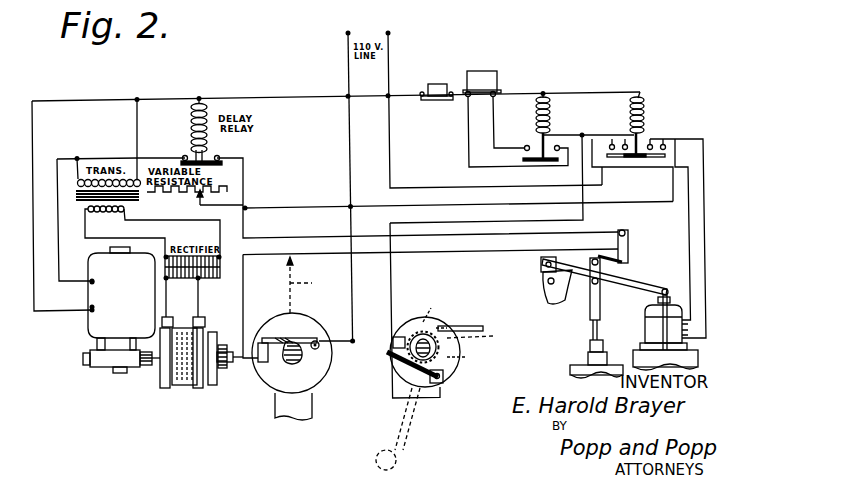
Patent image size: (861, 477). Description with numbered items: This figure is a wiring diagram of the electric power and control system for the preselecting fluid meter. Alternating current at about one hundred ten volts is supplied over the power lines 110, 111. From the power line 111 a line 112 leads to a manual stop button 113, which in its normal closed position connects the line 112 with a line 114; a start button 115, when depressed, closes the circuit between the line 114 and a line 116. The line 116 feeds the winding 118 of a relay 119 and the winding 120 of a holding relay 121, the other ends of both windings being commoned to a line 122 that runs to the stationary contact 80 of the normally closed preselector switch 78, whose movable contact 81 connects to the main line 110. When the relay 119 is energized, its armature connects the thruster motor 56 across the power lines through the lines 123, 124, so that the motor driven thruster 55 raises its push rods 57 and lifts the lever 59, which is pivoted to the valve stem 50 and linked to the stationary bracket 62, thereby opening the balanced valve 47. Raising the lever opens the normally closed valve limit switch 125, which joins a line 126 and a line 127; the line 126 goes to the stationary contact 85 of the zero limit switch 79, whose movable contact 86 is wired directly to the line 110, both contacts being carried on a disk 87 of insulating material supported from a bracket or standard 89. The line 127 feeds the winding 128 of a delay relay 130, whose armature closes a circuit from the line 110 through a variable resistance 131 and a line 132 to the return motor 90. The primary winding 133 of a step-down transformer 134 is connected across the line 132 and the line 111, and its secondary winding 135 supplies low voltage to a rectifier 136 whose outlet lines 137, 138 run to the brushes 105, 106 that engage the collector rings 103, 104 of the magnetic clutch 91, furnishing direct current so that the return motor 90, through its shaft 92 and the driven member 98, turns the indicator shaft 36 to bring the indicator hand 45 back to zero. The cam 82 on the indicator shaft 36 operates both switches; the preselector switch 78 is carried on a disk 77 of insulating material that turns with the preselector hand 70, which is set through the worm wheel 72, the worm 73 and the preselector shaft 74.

The indicator shaft 36 is at (228, 366).
The indicator hand 45 is at (307, 285).
The balanced valve 47 is at (572, 365).
The valve stem 50 is at (590, 326).
The motor driven thruster 55 is at (682, 333).
The thruster motor 56 is at (654, 334).
The push rods 57 is at (656, 320).
The lever 59 is at (644, 296).
The stationary bracket 62 is at (560, 300).
The preselector hand 70 is at (408, 447).
The worm wheel 72 is at (480, 338).
The worm 73 is at (423, 327).
The preselector shaft 74 is at (478, 326).
The disk of insulating material 77 is at (460, 381).
The preselector switch 78 is at (392, 358).
The zero limit switch 79 is at (296, 351).
The stationary contact 80 is at (437, 381).
The movable contact 81 is at (394, 378).
The cam 82 is at (309, 360).
The stationary contact 85 is at (289, 364).
The movable contact 86 is at (283, 336).
The disk of insulating material 87 is at (260, 388).
The bracket or standard 89 is at (314, 405).
The return motor 90 is at (82, 274).
The magnetic clutch 91 is at (181, 350).
The shaft 92 is at (150, 370).
The driven member 98 is at (216, 336).
The collector ring 103 is at (169, 386).
The collector ring 104 is at (202, 386).
The stationary brush 105 is at (171, 325).
The stationary brush 106 is at (204, 322).
The power line 110 is at (340, 70).
The power line 111 is at (85, 94).
The line 112 is at (413, 98).
The manual stop button 113 is at (431, 110).
The line 114 is at (451, 108).
The start button 115 is at (497, 72).
The line 116 is at (600, 92).
The winding 118 is at (650, 98).
The relay 119 is at (638, 90).
The winding 120 is at (536, 108).
The holding relay 121 is at (545, 90).
The line 122 is at (606, 135).
The line 123 is at (688, 213).
The line 124 is at (706, 166).
The valve limit switch 125 is at (616, 240).
The line 126 is at (463, 264).
The line 127 is at (245, 166).
The winding 128 is at (187, 124).
The delay relay 130 is at (215, 80).
The variable resistance 131 is at (204, 192).
The line 132 is at (180, 156).
The primary winding 133 is at (139, 195).
The step-down transformer 134 is at (137, 206).
The secondary winding 135 is at (96, 226).
The rectifier 136 is at (203, 284).
The outlet line 137 is at (168, 286).
The outlet line 138 is at (166, 306).